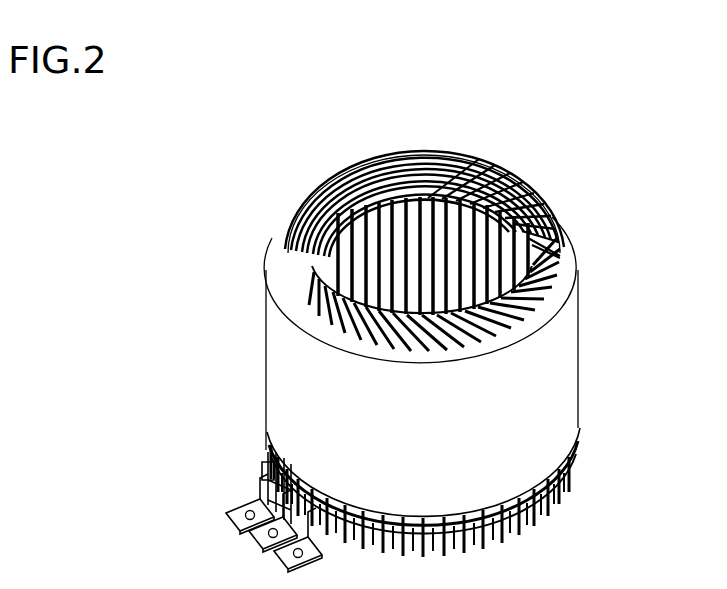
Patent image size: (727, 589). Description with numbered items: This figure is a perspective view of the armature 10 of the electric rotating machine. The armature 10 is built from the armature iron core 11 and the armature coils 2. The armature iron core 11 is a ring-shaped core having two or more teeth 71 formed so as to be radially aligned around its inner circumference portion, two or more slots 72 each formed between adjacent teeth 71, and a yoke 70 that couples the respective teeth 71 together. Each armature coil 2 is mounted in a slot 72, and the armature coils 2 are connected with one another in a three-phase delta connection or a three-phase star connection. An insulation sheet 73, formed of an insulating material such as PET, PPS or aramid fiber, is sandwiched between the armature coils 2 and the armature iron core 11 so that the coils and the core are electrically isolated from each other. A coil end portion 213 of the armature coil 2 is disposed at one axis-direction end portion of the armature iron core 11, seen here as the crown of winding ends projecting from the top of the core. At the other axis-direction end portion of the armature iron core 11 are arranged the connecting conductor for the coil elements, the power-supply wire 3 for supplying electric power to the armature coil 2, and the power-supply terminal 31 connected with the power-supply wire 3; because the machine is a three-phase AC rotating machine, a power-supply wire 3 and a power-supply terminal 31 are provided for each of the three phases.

The armature 10 is at (175, 263).
The armature coils 2 is at (552, 205).
The coil end portion 213 is at (522, 185).
The armature iron core 11 is at (388, 85).
The yoke 70 is at (270, 245).
The teeth 71 is at (413, 158).
The slots 72 is at (465, 163).
The insulation sheet 73 is at (520, 312).
The power-supply wire 3 is at (267, 470).
The power-supply terminal 31 is at (228, 517).